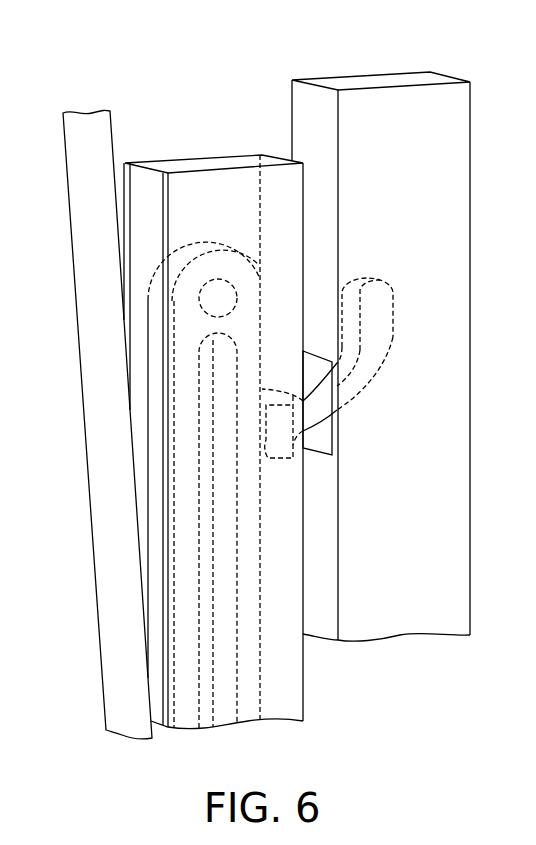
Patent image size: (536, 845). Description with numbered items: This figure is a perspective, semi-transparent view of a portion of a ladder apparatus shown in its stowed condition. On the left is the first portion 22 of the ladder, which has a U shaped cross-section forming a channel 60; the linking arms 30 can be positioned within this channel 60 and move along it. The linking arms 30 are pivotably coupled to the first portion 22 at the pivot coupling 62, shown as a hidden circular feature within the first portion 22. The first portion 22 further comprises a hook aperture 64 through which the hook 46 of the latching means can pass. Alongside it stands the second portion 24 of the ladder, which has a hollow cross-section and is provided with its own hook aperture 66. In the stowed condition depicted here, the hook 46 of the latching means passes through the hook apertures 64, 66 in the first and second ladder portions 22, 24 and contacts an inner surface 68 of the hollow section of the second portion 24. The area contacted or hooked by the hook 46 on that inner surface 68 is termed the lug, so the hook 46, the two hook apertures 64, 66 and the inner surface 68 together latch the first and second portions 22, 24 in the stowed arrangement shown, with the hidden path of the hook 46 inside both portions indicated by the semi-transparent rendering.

The first portion 22 is at (207, 192).
The second portion 24 is at (392, 112).
The linking arms 30 is at (157, 399).
The hook 46 is at (378, 348).
The channel 60 is at (145, 214).
The pivot coupling 62 is at (215, 297).
The hook aperture 64 is at (277, 462).
The hook aperture 66 is at (317, 453).
The inner surface 68 is at (340, 320).